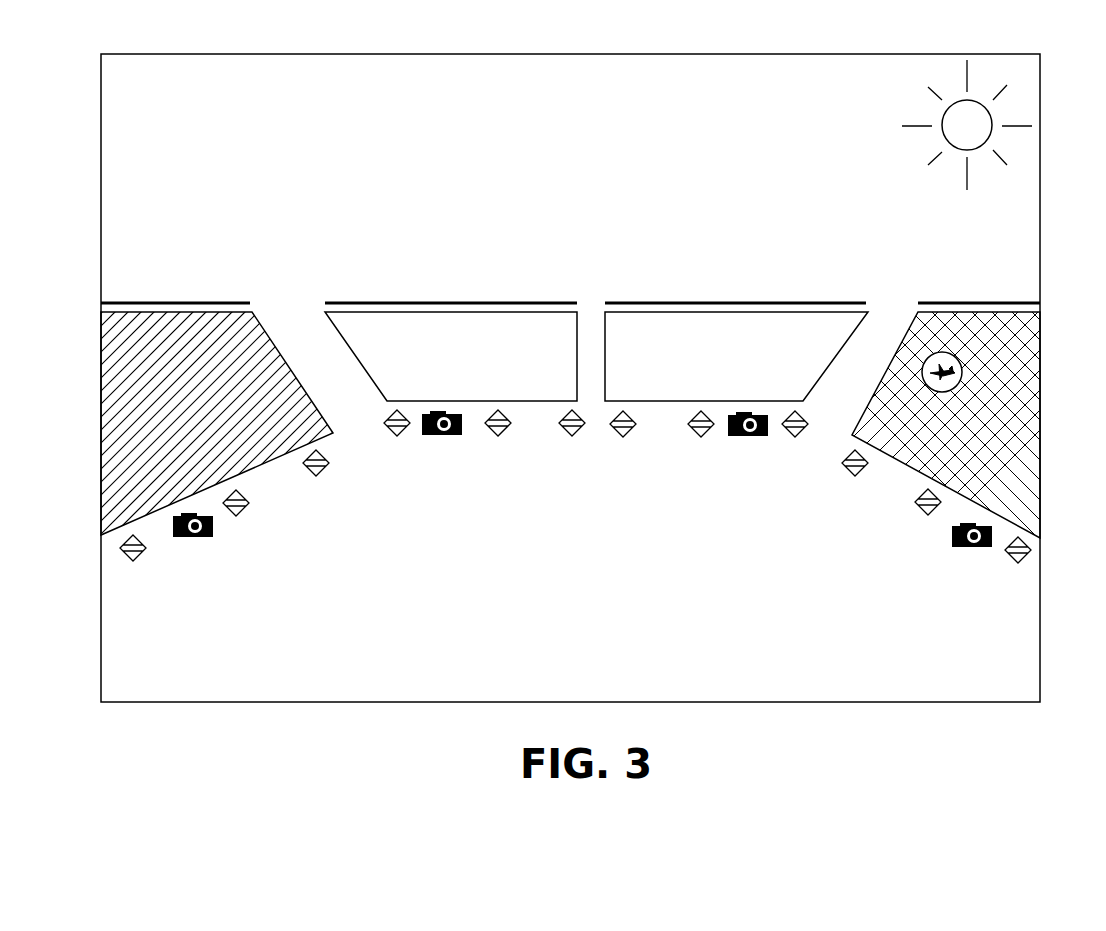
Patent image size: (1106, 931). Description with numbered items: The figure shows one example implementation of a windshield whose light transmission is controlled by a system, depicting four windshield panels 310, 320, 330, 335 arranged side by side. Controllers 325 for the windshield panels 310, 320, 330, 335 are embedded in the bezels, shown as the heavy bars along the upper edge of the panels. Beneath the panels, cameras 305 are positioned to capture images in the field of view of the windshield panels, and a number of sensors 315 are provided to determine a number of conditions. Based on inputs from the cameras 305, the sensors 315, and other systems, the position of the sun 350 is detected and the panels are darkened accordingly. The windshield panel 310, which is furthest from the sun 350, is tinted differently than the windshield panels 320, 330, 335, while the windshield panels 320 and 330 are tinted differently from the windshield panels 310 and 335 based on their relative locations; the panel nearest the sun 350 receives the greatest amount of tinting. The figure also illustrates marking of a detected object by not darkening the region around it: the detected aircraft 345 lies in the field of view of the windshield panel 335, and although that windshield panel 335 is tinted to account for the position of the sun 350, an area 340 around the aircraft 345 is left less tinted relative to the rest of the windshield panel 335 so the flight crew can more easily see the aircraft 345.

The cameras 305 is at (197, 540).
The windshield panel 310 is at (255, 470).
The sensors 315 is at (397, 432).
The windshield panel 320 is at (515, 401).
The controllers 325 is at (490, 302).
The windshield panel 330 is at (652, 403).
The windshield panel 335 is at (900, 463).
The area 340 is at (963, 357).
The detected aircraft 345 is at (932, 368).
The sun 350 is at (942, 130).